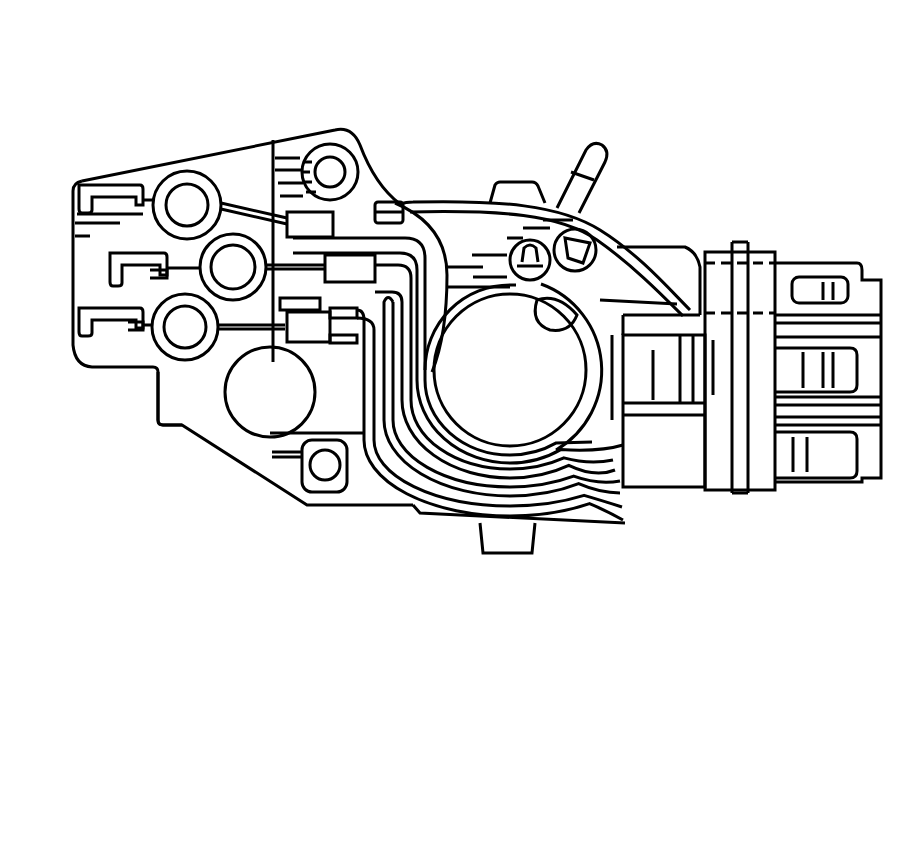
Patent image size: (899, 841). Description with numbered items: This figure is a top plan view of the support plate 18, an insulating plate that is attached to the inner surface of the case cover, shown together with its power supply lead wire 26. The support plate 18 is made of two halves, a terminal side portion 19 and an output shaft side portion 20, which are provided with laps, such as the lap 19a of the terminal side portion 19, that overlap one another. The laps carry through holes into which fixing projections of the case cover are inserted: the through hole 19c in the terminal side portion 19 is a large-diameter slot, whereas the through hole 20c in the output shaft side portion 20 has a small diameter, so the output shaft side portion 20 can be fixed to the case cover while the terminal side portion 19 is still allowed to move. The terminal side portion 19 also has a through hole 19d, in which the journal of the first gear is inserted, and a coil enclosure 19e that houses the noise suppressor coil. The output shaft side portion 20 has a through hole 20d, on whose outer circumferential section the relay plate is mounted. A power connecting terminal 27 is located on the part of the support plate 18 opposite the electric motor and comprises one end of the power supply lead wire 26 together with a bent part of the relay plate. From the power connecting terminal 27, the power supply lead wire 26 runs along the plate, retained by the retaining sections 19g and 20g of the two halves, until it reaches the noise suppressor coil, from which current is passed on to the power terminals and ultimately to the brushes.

The support plate 18 is at (306, 88).
The terminal side portion 19 is at (232, 158).
The lap 19a is at (362, 157).
The through hole 19c is at (312, 468).
The through hole 19d is at (247, 413).
The coil enclosure 19e is at (172, 347).
The retaining section 19g is at (392, 202).
The output shaft side portion 20 is at (472, 227).
The through hole 20c is at (315, 498).
The through hole 20d is at (571, 318).
The retaining section 20g is at (527, 487).
The power supply lead wire 26 is at (455, 505).
The power connecting terminal 27 is at (825, 462).